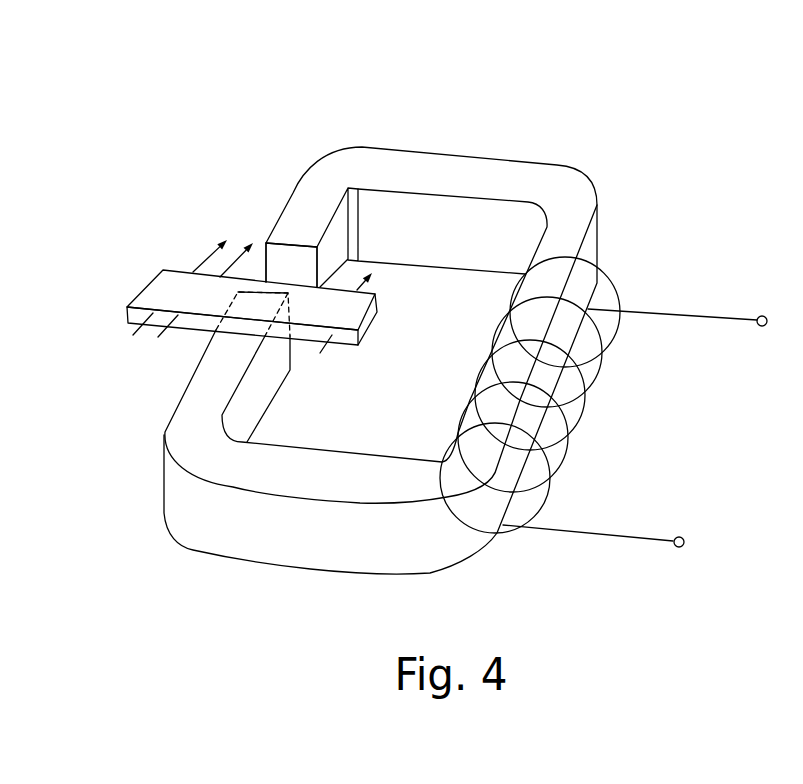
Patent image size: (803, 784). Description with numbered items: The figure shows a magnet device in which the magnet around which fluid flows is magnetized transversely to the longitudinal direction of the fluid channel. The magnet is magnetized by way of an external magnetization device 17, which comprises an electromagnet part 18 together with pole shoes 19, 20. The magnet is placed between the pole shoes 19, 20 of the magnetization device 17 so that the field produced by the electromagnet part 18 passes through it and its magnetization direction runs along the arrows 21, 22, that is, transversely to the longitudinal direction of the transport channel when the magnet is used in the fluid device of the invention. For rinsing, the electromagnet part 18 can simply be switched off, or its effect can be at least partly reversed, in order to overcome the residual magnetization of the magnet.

The external magnetization device 17 is at (476, 110).
The electromagnet part 18 is at (590, 310).
The pole shoe 19 is at (293, 193).
The pole shoe 20 is at (205, 332).
The arrow 21 is at (208, 252).
The arrow 22 is at (252, 242).